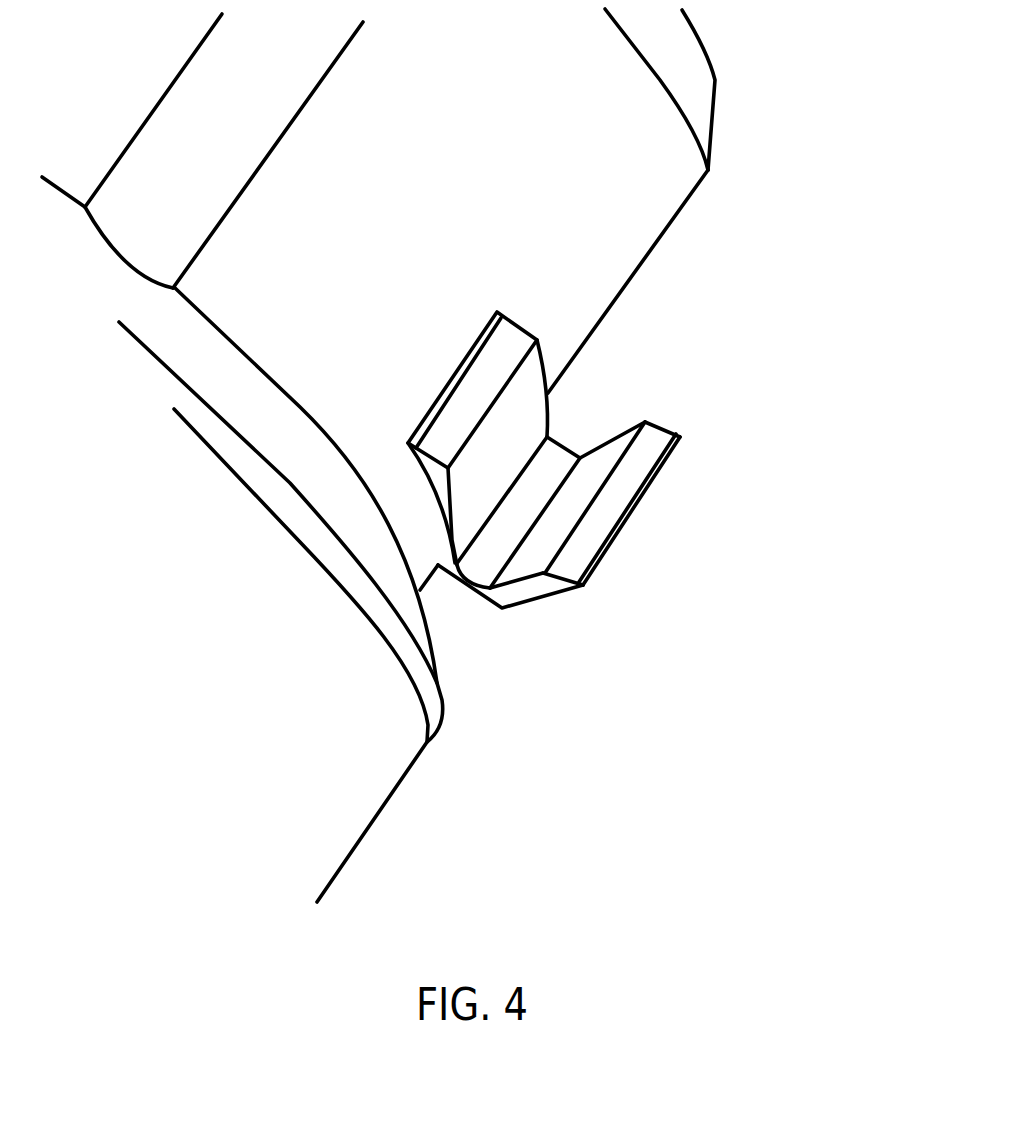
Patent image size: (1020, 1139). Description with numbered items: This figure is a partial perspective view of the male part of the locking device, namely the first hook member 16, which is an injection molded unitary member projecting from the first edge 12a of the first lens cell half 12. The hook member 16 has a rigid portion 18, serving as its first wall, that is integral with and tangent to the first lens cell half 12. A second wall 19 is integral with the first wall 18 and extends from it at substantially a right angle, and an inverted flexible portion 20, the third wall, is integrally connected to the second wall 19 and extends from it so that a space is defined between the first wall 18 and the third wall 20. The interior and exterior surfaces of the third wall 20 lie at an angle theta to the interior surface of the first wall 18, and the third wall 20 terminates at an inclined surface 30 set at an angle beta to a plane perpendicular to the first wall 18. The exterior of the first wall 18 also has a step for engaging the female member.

The first lens cell half 12 is at (726, 122).
The first edge 12a is at (677, 218).
The first hook member 16 is at (659, 541).
The rigid portion 18 is at (522, 401).
The second wall 19 is at (553, 458).
The inverted flexible portion 20 is at (530, 553).
The inclined surface 30 is at (643, 512).